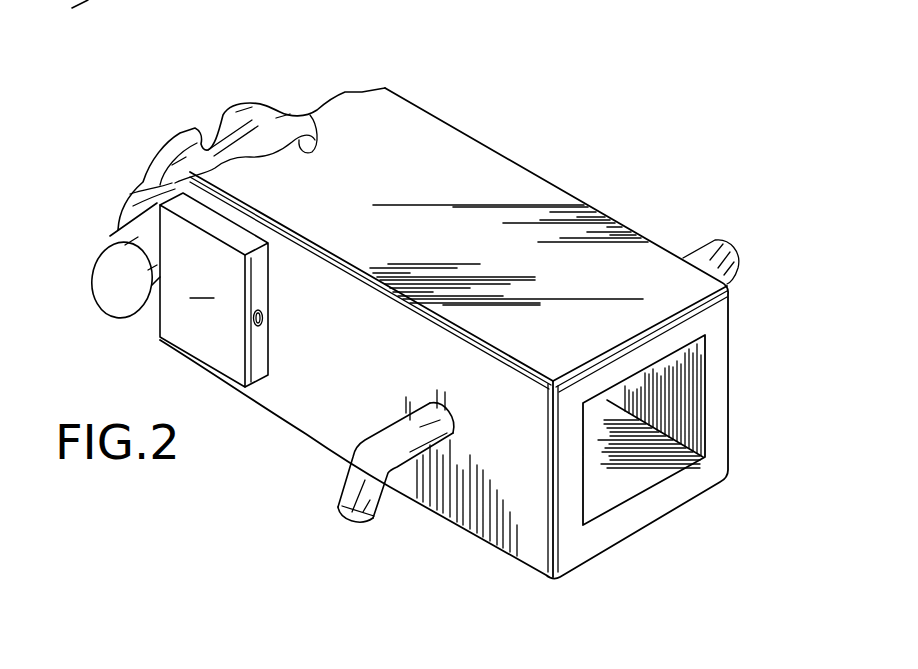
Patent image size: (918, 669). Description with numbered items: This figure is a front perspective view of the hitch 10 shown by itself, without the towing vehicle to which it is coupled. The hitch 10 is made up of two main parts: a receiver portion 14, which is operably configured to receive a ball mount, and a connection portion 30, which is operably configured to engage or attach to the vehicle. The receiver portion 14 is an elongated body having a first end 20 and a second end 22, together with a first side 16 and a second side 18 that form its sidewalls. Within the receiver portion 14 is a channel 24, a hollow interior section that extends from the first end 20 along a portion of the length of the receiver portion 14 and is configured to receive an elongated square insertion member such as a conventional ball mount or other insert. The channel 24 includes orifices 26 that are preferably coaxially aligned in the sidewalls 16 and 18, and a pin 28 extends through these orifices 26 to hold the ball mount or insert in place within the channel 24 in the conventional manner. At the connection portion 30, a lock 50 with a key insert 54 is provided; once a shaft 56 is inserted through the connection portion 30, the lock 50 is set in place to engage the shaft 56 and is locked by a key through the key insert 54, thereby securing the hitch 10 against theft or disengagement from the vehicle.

The hitch 10 is at (676, 121).
The receiver portion 14 is at (772, 242).
The first side 16 is at (512, 158).
The second side 18 is at (320, 421).
The first end 20 is at (717, 474).
The second end 22 is at (375, 110).
The channel 24 is at (605, 492).
The orifices 26 is at (438, 405).
The pin 28 is at (336, 508).
The connection portion 30 is at (167, 146).
The lock 50 is at (256, 290).
The key insert 54 is at (266, 318).
The shaft 56 is at (95, 243).